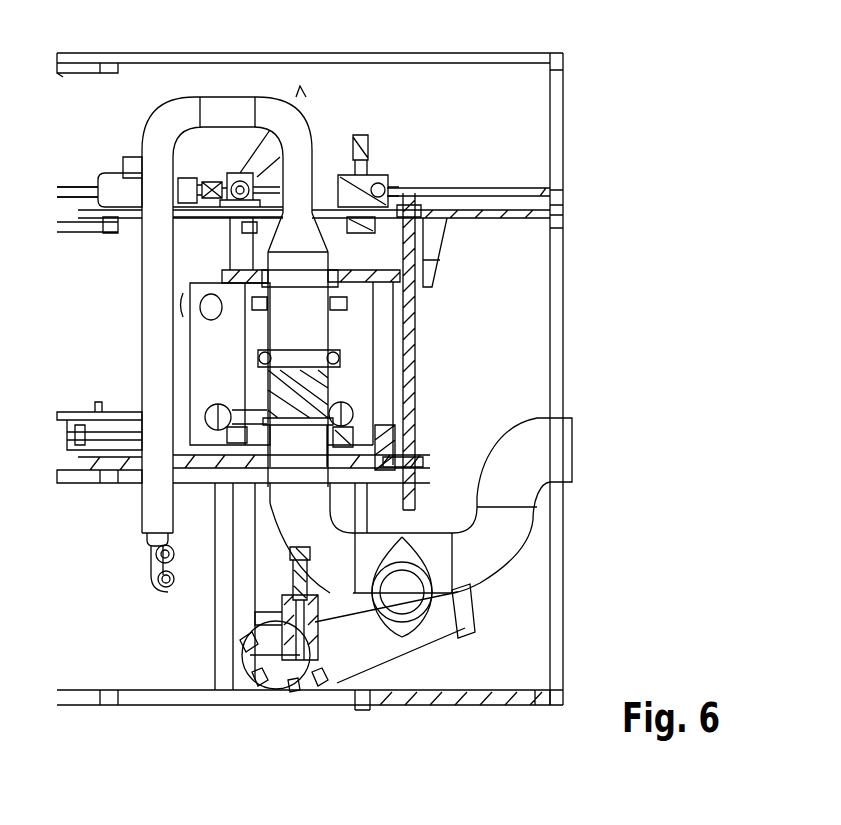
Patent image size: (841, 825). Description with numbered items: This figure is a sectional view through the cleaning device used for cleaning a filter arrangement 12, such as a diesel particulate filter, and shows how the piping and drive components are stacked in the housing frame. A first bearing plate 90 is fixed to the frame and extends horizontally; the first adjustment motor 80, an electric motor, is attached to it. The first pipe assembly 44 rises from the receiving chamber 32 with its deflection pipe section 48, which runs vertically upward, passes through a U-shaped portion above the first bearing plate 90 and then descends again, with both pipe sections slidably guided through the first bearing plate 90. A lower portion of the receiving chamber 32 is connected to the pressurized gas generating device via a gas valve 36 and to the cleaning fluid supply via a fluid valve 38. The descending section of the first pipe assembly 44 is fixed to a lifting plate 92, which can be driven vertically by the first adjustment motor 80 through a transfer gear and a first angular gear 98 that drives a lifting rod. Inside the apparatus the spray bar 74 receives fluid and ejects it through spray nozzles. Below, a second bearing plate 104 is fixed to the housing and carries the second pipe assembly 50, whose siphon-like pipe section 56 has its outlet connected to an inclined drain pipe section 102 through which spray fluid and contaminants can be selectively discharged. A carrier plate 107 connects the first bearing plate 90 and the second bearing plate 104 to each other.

The filter arrangement 12 is at (317, 397).
The receiving chamber 32 is at (155, 377).
The gas valve 36 is at (173, 585).
The fluid valve 38 is at (177, 552).
The first pipe assembly 44 is at (193, 277).
The deflection pipe section 48 is at (230, 105).
The second pipe assembly 50 is at (552, 526).
The siphon-like pipe section 56 is at (497, 572).
The spray bar 74 is at (207, 348).
The first adjustment motor 80 is at (113, 178).
The first bearing plate 90 is at (507, 222).
The lifting plate 92 is at (227, 257).
The first angular gear 98 is at (372, 177).
The inclined drain pipe section 102 is at (447, 617).
The second bearing plate 104 is at (65, 483).
The carrier plate 107 is at (410, 347).